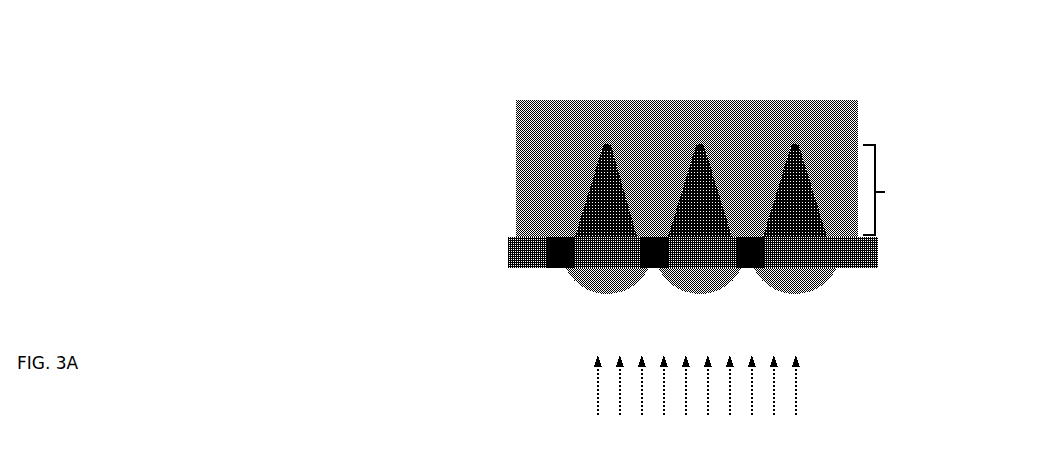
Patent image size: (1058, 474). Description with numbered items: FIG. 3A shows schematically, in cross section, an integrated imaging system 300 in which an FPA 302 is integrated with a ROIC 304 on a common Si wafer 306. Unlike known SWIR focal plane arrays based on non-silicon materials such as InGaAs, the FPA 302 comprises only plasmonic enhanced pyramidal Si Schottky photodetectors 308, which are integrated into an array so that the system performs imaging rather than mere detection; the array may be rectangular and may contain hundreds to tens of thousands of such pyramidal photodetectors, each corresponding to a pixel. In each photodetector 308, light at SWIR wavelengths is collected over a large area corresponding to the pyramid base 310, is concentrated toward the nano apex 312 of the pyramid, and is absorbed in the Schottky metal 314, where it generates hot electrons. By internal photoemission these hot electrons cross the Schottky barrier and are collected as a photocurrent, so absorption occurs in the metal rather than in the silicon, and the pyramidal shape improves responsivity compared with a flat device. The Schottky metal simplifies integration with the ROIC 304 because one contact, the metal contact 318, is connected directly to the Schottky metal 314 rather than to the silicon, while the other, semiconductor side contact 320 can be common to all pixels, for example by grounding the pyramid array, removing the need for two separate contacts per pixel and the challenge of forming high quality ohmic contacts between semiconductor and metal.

The integrated imaging system 300 is at (376, 27).
The FPA 302 is at (563, 293).
The ROIC 304 is at (595, 290).
The common Si wafer 306 is at (508, 258).
The plasmonic enhanced pyramidal Si Schottky photodetector 308 is at (900, 190).
The pyramid base 310 is at (835, 272).
The nano apex 312 is at (797, 145).
The Schottky metal 314 is at (700, 145).
The metal contact 318 is at (607, 145).
The semiconductor side contact 320 is at (553, 143).